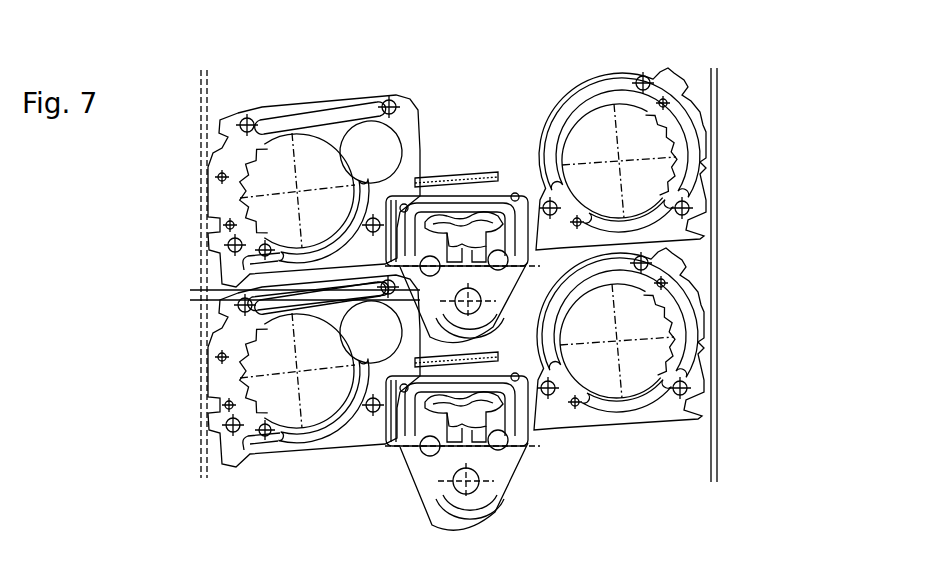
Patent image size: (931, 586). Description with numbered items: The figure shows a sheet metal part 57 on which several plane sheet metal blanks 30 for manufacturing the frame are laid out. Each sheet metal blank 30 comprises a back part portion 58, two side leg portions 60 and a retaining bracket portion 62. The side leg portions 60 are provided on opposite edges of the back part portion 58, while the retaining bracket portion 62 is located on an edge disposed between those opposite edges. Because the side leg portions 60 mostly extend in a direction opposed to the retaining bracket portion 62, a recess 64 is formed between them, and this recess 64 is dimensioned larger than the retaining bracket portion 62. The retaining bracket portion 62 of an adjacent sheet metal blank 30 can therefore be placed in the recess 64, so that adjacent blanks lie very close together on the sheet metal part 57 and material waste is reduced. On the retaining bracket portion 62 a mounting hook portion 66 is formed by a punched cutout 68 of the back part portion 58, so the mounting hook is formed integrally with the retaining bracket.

The sheet metal blank 30 is at (724, 58).
The sheet metal part 57 is at (727, 96).
The back part portion 58 is at (494, 190).
The side leg portions 60 is at (304, 100).
The retaining bracket portion 62 is at (491, 290).
The recess 64 is at (440, 170).
The mounting hook portion 66 is at (463, 262).
The punched cutout 68 is at (445, 262).